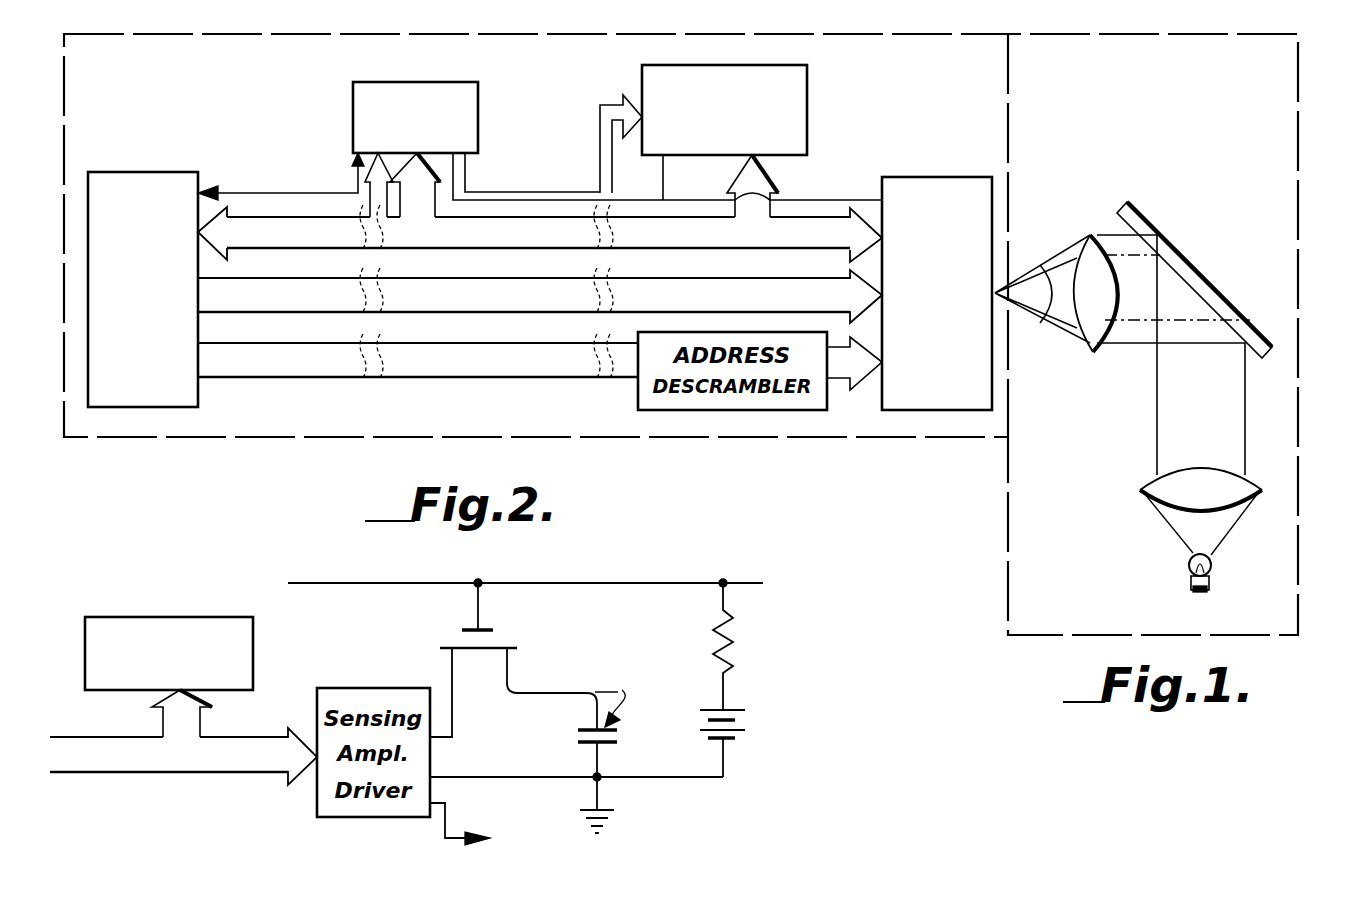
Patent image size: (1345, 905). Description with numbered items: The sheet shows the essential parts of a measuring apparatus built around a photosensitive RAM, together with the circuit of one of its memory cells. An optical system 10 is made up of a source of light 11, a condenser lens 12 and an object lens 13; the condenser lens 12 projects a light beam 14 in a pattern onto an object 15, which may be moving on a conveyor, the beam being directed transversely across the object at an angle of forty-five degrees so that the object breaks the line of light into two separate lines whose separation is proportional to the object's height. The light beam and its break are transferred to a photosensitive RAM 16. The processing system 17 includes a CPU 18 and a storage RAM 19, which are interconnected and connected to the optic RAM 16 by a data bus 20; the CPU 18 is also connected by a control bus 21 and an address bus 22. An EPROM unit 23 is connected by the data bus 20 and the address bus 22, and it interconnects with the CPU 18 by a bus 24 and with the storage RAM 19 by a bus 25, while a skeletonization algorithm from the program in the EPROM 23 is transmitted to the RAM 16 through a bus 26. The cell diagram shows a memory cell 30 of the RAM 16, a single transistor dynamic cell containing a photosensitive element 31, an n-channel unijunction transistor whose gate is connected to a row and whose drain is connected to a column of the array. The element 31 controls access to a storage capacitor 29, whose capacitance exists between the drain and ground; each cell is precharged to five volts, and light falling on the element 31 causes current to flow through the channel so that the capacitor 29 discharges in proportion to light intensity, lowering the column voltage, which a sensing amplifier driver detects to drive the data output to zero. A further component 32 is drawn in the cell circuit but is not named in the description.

In FIG. 1, the optical system 10 is at (1128, 383).
In FIG. 1, the source of light 11 is at (1210, 581).
In FIG. 1, the condenser lens 12 is at (1170, 493).
In FIG. 1, the object lens 13 is at (1093, 262).
In FIG. 1, the light beam 14 is at (1037, 318).
In FIG. 1, the object 15 is at (1205, 287).
In FIG. 1, the photosensitive RAM 16 is at (940, 193).
In FIG. 1, the system 17 is at (280, 158).
In FIG. 1, the CPU 18 is at (147, 197).
In FIG. 1, the storage RAM 19 is at (783, 128).
In FIG. 2, the storage RAM 19 is at (169, 653).
In FIG. 1, the data bus 20 is at (643, 232).
In FIG. 2, the data bus 20 is at (183, 737).
In FIG. 1, the control bus 21 is at (630, 268).
In FIG. 1, the address bus 22 is at (528, 347).
In FIG. 1, the EPROM unit 23 is at (463, 97).
In FIG. 1, the bus 24 is at (575, 192).
In FIG. 1, the bus 25 is at (343, 192).
In FIG. 1, the bus 26 is at (629, 148).
In FIG. 2, the storage capacitor 29 is at (578, 739).
In FIG. 2, the memory cell 30 is at (588, 580).
In FIG. 2, the photosensitive element 31 is at (497, 641).
In FIG. 2, the voltage source 32 is at (705, 720).